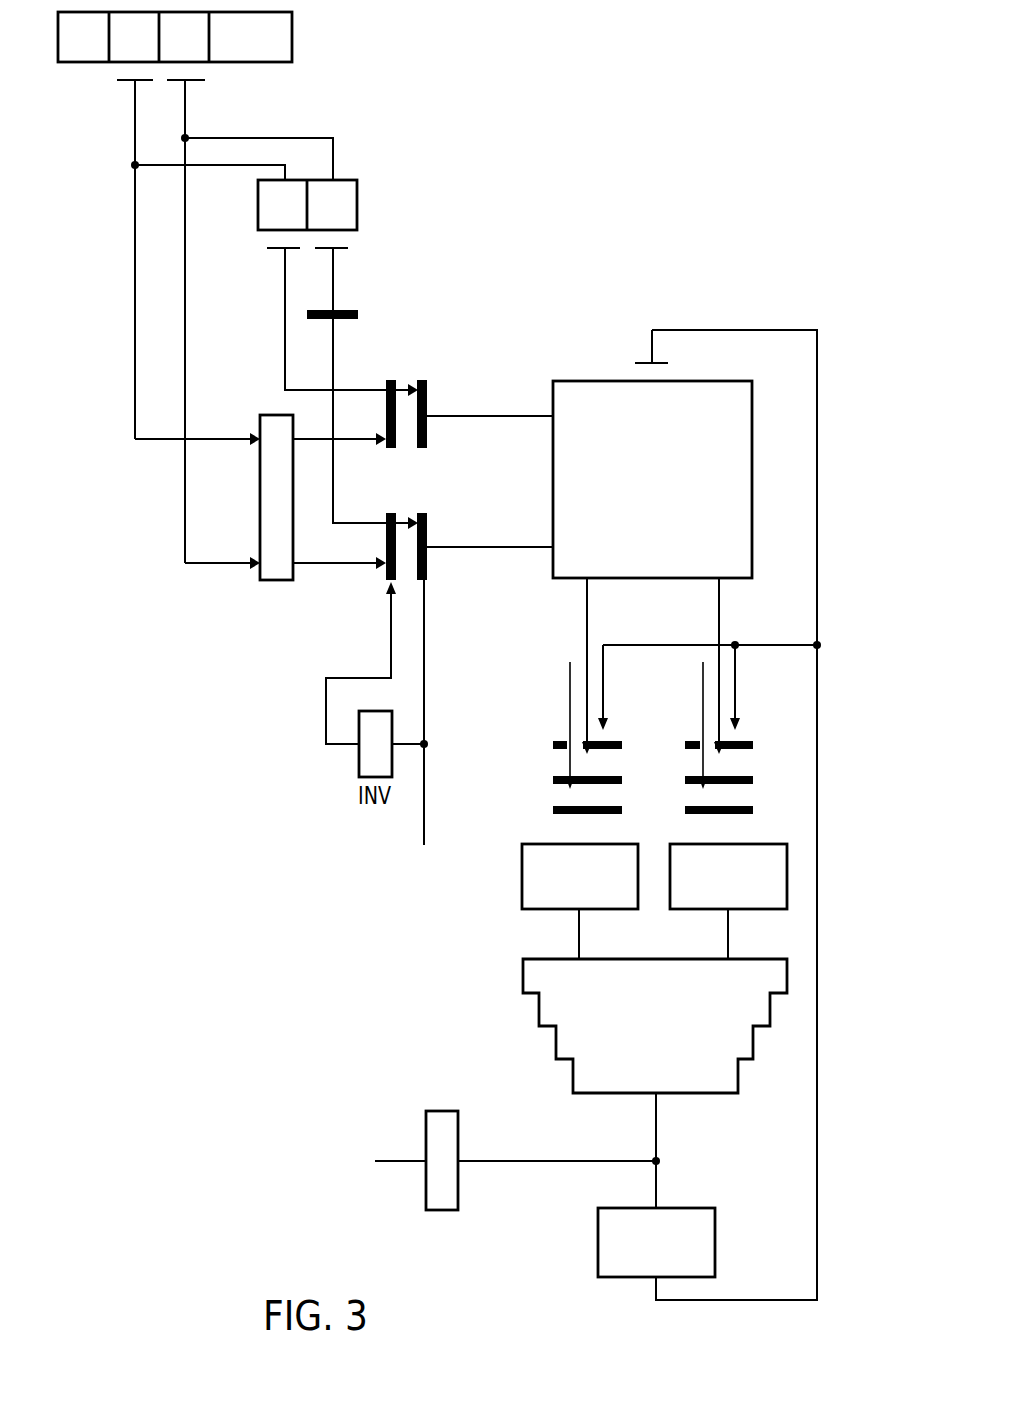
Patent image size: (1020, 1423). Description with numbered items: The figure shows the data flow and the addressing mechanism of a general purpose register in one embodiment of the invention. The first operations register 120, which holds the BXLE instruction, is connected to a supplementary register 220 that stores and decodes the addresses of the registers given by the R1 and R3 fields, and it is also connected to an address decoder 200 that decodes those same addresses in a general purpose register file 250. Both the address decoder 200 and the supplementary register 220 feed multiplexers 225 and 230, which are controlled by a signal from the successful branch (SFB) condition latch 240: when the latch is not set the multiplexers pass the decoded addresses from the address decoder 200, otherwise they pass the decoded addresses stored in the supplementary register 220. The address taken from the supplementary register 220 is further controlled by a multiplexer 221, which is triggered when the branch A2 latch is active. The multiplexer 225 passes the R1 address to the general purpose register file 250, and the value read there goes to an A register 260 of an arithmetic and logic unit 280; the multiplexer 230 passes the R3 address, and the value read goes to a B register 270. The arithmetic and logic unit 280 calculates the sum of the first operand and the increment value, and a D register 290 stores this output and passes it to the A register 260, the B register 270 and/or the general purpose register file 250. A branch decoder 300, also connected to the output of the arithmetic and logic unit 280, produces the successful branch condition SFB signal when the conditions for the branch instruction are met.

The first operations register 120 is at (293, 31).
The address decoder 200 is at (258, 422).
The supplementary register 220 is at (358, 200).
The multiplexer 221 is at (344, 310).
The multiplexer 225 is at (397, 385).
The multiplexer 230 is at (398, 517).
The successful branch (SFB) condition latch 240 is at (424, 743).
The general purpose register file 250 is at (583, 393).
The A register 260 is at (549, 905).
The B register 270 is at (707, 905).
The arithmetic and logic unit 280 is at (683, 1078).
The D register 290 is at (673, 1210).
The branch decoder 300 is at (455, 1189).